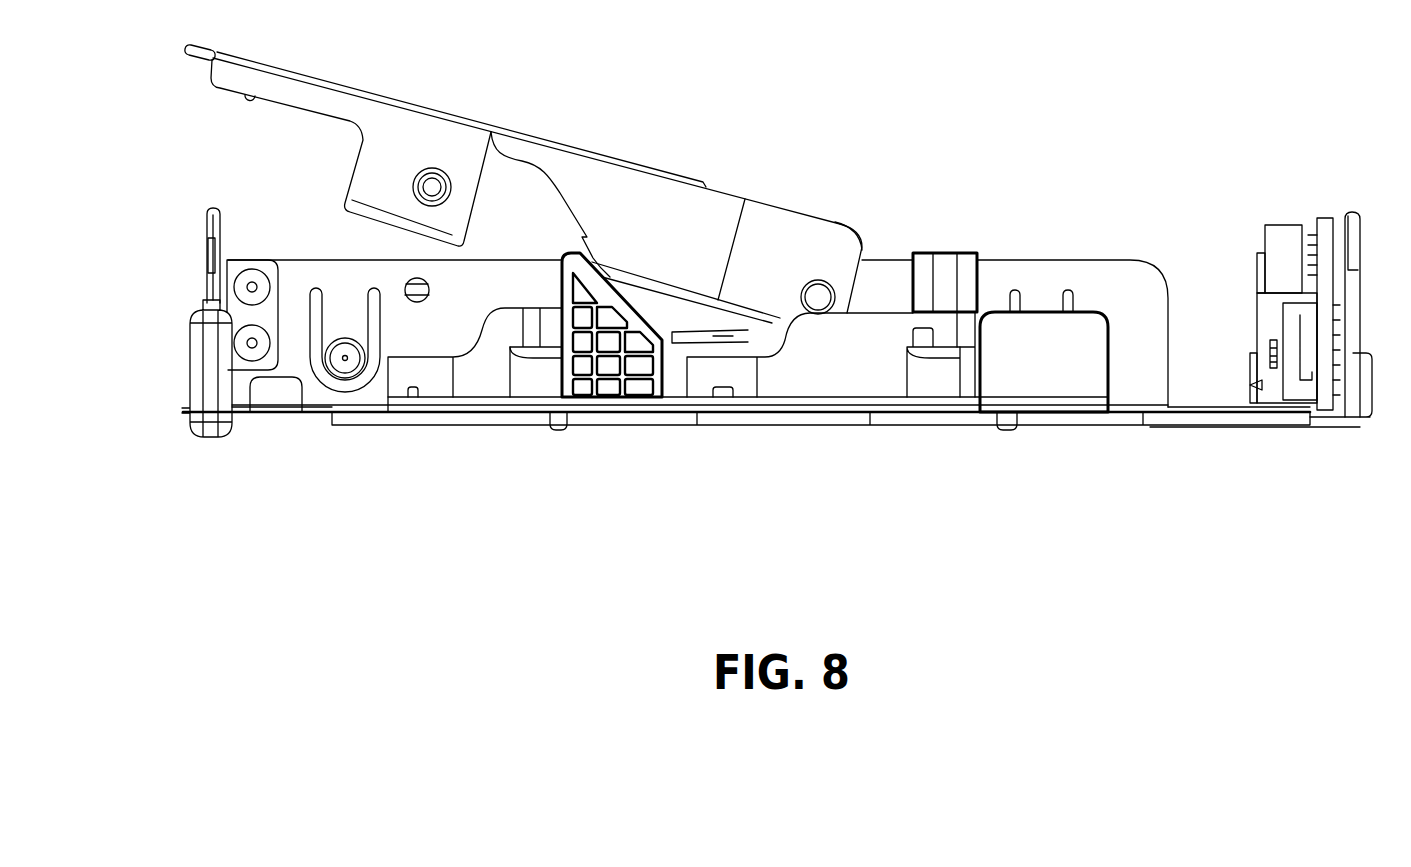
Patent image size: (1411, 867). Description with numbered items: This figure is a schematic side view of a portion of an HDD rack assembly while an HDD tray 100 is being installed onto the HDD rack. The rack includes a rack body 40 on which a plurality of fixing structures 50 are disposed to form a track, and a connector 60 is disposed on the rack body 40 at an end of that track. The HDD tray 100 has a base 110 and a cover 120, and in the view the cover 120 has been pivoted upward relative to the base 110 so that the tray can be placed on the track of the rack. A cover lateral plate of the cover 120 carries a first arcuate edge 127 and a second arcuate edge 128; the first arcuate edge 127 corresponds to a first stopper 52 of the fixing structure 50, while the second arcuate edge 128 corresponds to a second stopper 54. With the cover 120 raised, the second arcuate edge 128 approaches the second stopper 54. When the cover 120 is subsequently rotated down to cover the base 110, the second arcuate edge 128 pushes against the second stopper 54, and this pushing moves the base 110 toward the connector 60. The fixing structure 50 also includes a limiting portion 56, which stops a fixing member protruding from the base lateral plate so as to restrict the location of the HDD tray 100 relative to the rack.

The HDD tray 100 is at (992, 104).
The base 110 is at (1008, 273).
The cover 120 is at (798, 233).
The first arcuate edge 127 is at (860, 240).
The second arcuate edge 128 is at (562, 212).
The rack body 40 is at (1232, 427).
The fixing structure 50 is at (1108, 364).
The first stopper 52 is at (908, 283).
The second stopper 54 is at (641, 313).
The limiting portion 56 is at (555, 374).
The connector 60 is at (1296, 307).